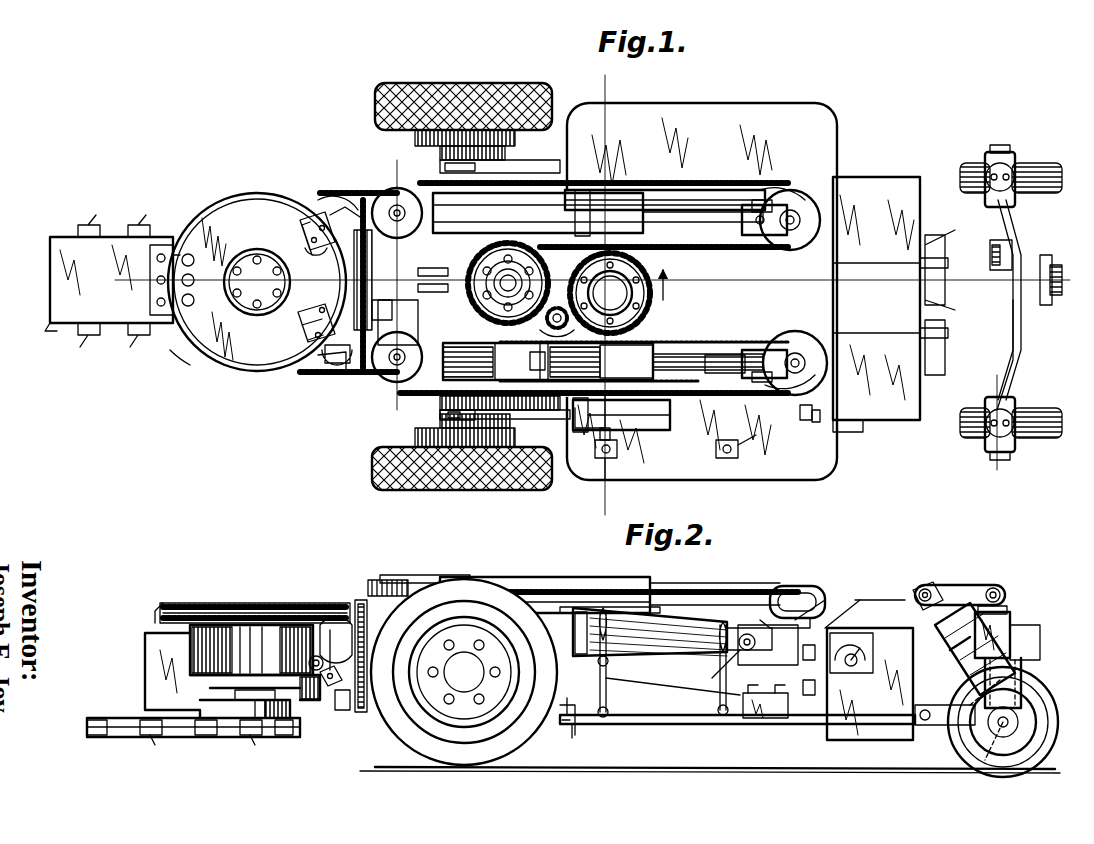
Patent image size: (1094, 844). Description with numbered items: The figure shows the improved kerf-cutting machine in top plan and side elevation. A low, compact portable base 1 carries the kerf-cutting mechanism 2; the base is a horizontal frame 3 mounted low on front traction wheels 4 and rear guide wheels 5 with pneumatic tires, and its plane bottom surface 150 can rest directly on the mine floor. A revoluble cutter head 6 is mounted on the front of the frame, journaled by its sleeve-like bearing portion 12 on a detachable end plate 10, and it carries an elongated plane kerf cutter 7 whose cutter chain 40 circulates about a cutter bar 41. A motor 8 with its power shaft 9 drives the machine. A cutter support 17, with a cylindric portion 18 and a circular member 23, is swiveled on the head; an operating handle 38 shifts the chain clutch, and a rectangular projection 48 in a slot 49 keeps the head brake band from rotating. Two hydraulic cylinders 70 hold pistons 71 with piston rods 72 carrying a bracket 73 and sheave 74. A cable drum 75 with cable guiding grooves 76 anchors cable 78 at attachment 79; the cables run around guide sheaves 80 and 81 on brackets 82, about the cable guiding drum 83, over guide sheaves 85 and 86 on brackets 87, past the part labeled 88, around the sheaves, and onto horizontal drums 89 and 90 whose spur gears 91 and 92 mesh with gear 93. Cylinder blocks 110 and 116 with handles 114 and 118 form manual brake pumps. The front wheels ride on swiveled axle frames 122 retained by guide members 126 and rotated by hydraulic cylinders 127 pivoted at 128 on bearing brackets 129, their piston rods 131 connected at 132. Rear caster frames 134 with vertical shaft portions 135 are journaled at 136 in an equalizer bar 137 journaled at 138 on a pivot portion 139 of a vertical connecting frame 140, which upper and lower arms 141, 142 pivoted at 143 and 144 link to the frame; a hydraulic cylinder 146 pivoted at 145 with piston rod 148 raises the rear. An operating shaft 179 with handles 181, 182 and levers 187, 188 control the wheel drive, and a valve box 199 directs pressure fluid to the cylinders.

In FIG. 1, the portable base 1 is at (850, 178).
In FIG. 2, the portable base 1 is at (672, 738).
In FIG. 1, the kerf-cutting mechanism 2 is at (194, 225).
In FIG. 2, the kerf-cutting mechanism 2 is at (143, 642).
In FIG. 1, the horizontal frame 3 is at (838, 210).
In FIG. 2, the horizontal frame 3 is at (622, 727).
In FIG. 1, the front traction wheels 4 is at (425, 86).
In FIG. 2, the front traction wheels 4 is at (415, 740).
In FIG. 1, the rear guide wheels 5 is at (1045, 168).
In FIG. 2, the rear guide wheels 5 is at (1025, 768).
In FIG. 1, the cutter head 6 is at (393, 163).
In FIG. 2, the cutter head 6 is at (285, 603).
In FIG. 1, the kerf cutter 7 is at (72, 236).
In FIG. 2, the kerf cutter 7 is at (190, 738).
In FIG. 1, the motor 8 is at (845, 260).
In FIG. 2, the motor 8 is at (838, 628).
In FIG. 1, the power shaft 9 is at (995, 380).
In FIG. 1, the end plate 10 is at (604, 88).
In FIG. 1, the sleeve-like bearing portion 12 is at (395, 412).
In FIG. 2, the cutter support 17 is at (232, 738).
In FIG. 2, the cylindric portion 18 is at (262, 738).
In FIG. 1, the circular member 23 is at (228, 220).
In FIG. 2, the operating handle 38 is at (335, 705).
In FIG. 1, the cutter chain 40 is at (120, 228).
In FIG. 2, the cutter chain 40 is at (135, 738).
In FIG. 1, the cutter bar 41 is at (90, 332).
In FIG. 2, the cutter bar 41 is at (100, 738).
In FIG. 1, the rectangular projection 48 is at (440, 278).
In FIG. 1, the slot 49 is at (440, 294).
In FIG. 1, the hydraulic cylinders 70 is at (628, 192).
In FIG. 2, the hydraulic cylinders 70 is at (548, 577).
In FIG. 1, the pistons 71 is at (475, 343).
In FIG. 1, the piston rods 72 is at (710, 224).
In FIG. 1, the bracket 73 is at (798, 195).
In FIG. 2, the bracket 73 is at (790, 586).
In FIG. 1, the sheave 74 is at (812, 225).
In FIG. 2, the sheave 74 is at (820, 615).
In FIG. 1, the cable drum 75 is at (207, 350).
In FIG. 2, the cable drum 75 is at (178, 604).
In FIG. 2, the cable guiding grooves 76 is at (160, 606).
In FIG. 1, the cable 78 is at (735, 352).
In FIG. 2, the cable 78 is at (748, 628).
In FIG. 1, the cable attachment 79 is at (270, 290).
In FIG. 1, the guide sheave 80 is at (300, 212).
In FIG. 1, the guide sheave 81 is at (325, 370).
In FIG. 2, the guide sheave 81 is at (335, 620).
In FIG. 1, the brackets 82 is at (312, 214).
In FIG. 2, the brackets 82 is at (345, 625).
In FIG. 1, the cable guiding drum 83 is at (335, 365).
In FIG. 2, the cable guiding drum 83 is at (360, 715).
In FIG. 1, the guide sheave 85 is at (348, 206).
In FIG. 2, the guide sheave 86 is at (408, 572).
In FIG. 1, the brackets 87 is at (380, 196).
In FIG. 2, the brackets 87 is at (448, 571).
In FIG. 1, the bearing housing 88 is at (385, 345).
In FIG. 1, the horizontal drum 89 is at (652, 272).
In FIG. 1, the horizontal drum 90 is at (480, 258).
In FIG. 1, the spur gear 91 is at (668, 300).
In FIG. 1, the spur gear 92 is at (486, 283).
In FIG. 1, the gear 93 is at (562, 305).
In FIG. 1, the cylinder block 110 is at (812, 420).
In FIG. 2, the cylinder block 110 is at (836, 603).
In FIG. 1, the operating handle 114 is at (820, 425).
In FIG. 2, the operating handle 114 is at (881, 589).
In FIG. 2, the cylinder block 116 is at (808, 660).
In FIG. 2, the operating handle 118 is at (812, 695).
In FIG. 1, the swiveled axle frame 122 is at (525, 130).
In FIG. 1, the guide members 126 is at (440, 165).
In FIG. 1, the hydraulic cylinders 127 is at (620, 190).
In FIG. 2, the hydraulic cylinders 127 is at (660, 612).
In FIG. 1, the pivot 128 is at (752, 205).
In FIG. 2, the pivot 128 is at (750, 633).
In FIG. 1, the bearing brackets 129 is at (762, 198).
In FIG. 2, the bearing brackets 129 is at (742, 664).
In FIG. 1, the piston rods 131 is at (490, 146).
In FIG. 2, the piston rods 131 is at (580, 607).
In FIG. 1, the pivotal connection 132 is at (458, 130).
In FIG. 1, the caster frames 134 is at (1008, 152).
In FIG. 2, the caster frames 134 is at (950, 738).
In FIG. 2, the vertical shaft portions 135 is at (1008, 612).
In FIG. 2, the journal 136 is at (1015, 630).
In FIG. 1, the equalizer bar 137 is at (1020, 370).
In FIG. 1, the journal 138 is at (1046, 255).
In FIG. 1, the longitudinal pivot portion 139 is at (990, 340).
In FIG. 1, the vertical connecting frame 140 is at (1018, 252).
In FIG. 2, the vertical connecting frame 140 is at (1005, 612).
In FIG. 1, the upper arm 141 is at (945, 378).
In FIG. 2, the upper arm 141 is at (965, 585).
In FIG. 2, the lower arm 142 is at (985, 750).
In FIG. 1, the pivotal connection 143 is at (998, 240).
In FIG. 2, the pivotal connection 143 is at (994, 588).
In FIG. 1, the pivotal connection 144 is at (935, 235).
In FIG. 2, the pivotal connection 144 is at (928, 588).
In FIG. 2, the pivot 145 is at (1003, 760).
In FIG. 2, the hydraulic cylinder 146 is at (958, 690).
In FIG. 2, the piston rod 148 is at (870, 653).
In FIG. 2, the plane bottom surface 150 is at (860, 742).
In FIG. 1, the operating shaft 179 is at (625, 450).
In FIG. 1, the operating handle 181 is at (612, 450).
In FIG. 1, the operating handle 182 is at (598, 458).
In FIG. 2, the operating handle 182 is at (565, 728).
In FIG. 1, the operating lever 187 is at (735, 460).
In FIG. 1, the operating lever 188 is at (728, 460).
In FIG. 2, the operating lever 188 is at (712, 688).
In FIG. 2, the valve box 199 is at (760, 710).